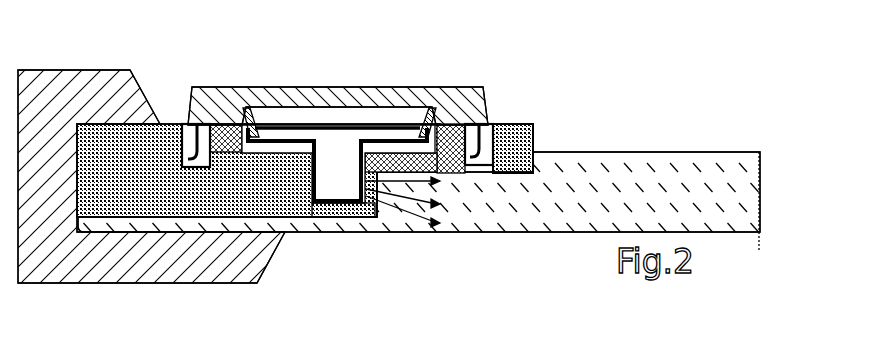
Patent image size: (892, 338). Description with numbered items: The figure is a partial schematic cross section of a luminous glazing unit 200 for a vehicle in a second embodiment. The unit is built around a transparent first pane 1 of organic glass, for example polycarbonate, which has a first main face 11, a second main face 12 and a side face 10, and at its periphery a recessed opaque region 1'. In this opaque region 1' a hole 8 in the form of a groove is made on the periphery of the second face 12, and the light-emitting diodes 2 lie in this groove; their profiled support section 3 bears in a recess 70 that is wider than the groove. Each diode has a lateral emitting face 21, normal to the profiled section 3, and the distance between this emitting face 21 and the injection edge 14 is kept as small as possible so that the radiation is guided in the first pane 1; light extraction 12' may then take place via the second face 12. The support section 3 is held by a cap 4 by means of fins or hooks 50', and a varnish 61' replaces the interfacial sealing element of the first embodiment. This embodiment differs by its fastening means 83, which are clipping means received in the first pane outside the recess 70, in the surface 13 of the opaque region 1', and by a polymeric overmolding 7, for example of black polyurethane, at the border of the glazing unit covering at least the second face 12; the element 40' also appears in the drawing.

The first pane 1 is at (419, 170).
The opaque region 1' is at (315, 195).
The light-emitting diode 2 is at (333, 160).
The profiled support section 3 is at (262, 133).
The cap 4 is at (402, 97).
The polymeric overmolding 7 is at (48, 80).
The hole 8 is at (365, 140).
The side face 10 is at (78, 218).
The first main face 11 is at (487, 232).
The second main face 12 is at (620, 129).
The light extraction 12' is at (725, 128).
The surface 13 is at (160, 122).
The injection edge 14 is at (368, 190).
The emitting face 21 is at (355, 203).
The trench wall 40' is at (245, 223).
The hooks 50' is at (366, 77).
The varnish 61' is at (326, 260).
The recess 70 is at (297, 120).
The fastening means 83 is at (196, 137).
The luminous glazing unit 200 is at (600, 85).